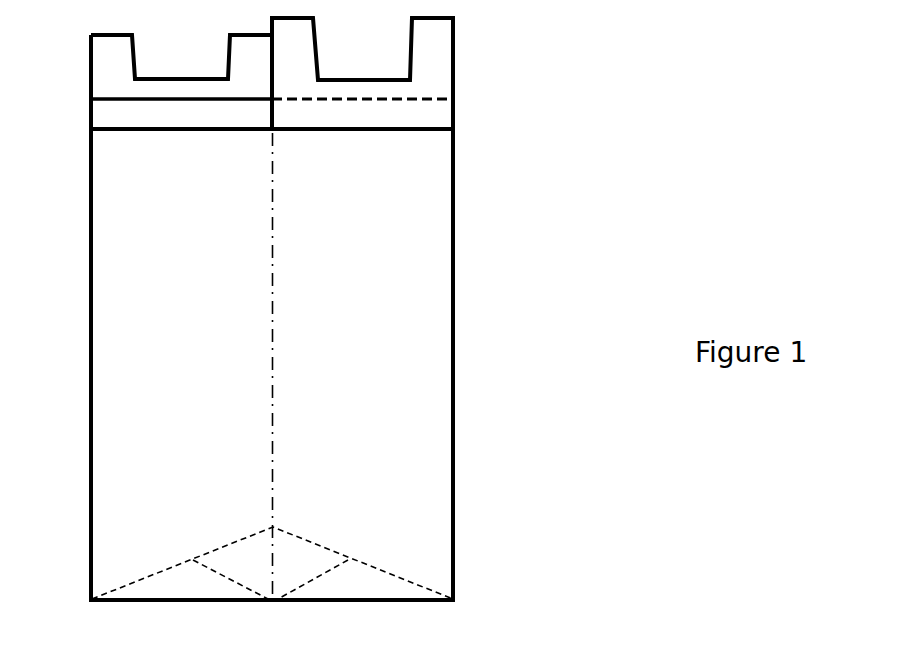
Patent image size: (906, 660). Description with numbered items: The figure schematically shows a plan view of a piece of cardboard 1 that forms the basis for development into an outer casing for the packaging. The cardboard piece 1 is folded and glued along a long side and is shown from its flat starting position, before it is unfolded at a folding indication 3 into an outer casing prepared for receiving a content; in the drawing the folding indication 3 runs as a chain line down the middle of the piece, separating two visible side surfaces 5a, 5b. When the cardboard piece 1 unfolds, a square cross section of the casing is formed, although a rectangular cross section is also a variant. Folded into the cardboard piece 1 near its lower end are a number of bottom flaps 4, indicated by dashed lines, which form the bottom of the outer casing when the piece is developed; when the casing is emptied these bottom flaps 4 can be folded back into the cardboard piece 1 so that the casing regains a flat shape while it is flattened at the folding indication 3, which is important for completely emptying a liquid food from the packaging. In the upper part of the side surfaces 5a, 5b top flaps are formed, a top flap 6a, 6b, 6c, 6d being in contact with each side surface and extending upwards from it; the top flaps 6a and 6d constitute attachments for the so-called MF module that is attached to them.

The piece of cardboard 1 is at (543, 511).
The folding indication 3 is at (273, 417).
The bottom flaps 4 is at (246, 565).
The side surface 5a is at (354, 280).
The side surface 5b is at (187, 280).
The top flap 6a is at (455, 65).
The top flap 6b is at (208, 97).
The top flap 6c is at (363, 97).
The top flap 6d is at (182, 78).